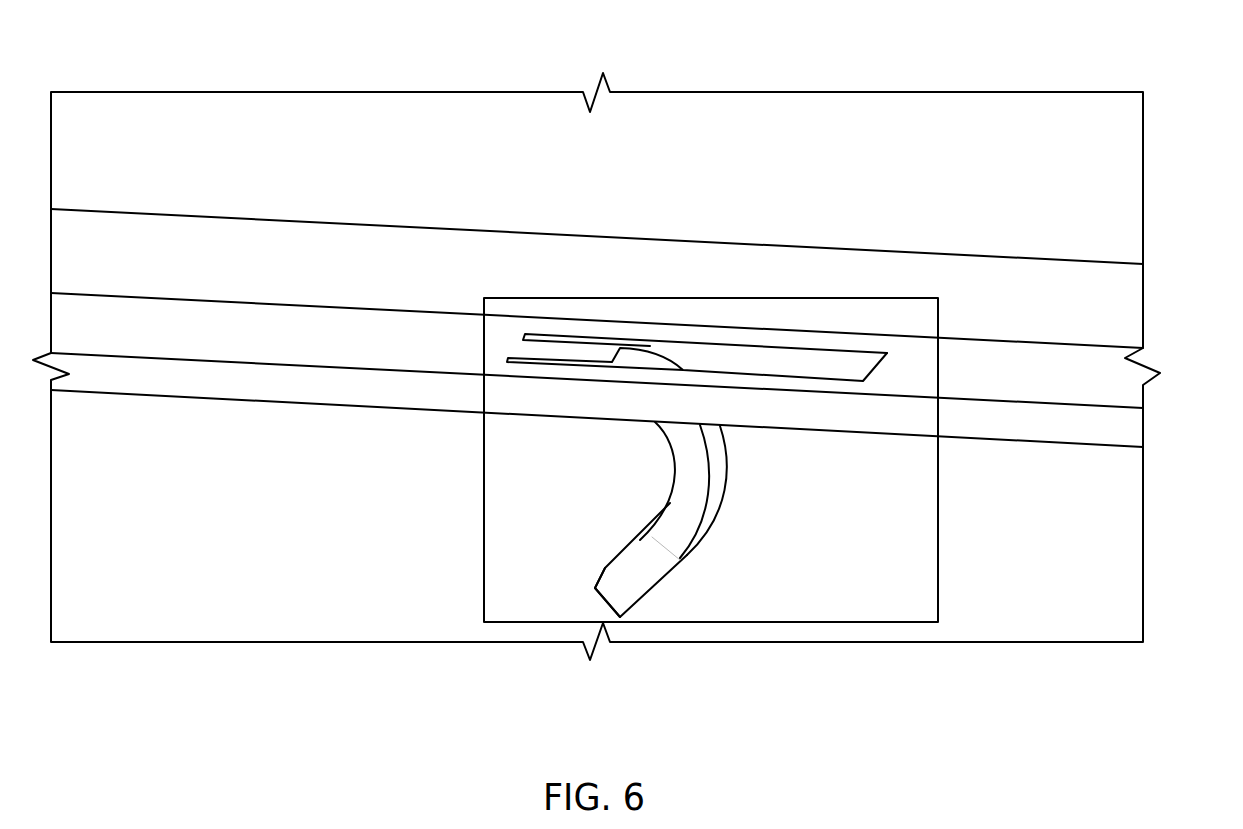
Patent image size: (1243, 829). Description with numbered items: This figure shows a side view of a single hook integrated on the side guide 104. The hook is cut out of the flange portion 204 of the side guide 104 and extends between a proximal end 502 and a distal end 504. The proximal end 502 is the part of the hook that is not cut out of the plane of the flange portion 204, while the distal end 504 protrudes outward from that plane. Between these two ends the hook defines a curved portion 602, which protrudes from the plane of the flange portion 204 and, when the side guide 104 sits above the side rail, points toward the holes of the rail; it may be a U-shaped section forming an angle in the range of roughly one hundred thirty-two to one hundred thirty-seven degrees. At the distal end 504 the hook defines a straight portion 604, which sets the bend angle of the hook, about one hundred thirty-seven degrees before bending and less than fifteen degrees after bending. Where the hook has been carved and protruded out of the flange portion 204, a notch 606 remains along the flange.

The side guide 104 is at (953, 108).
The flange portion 204 is at (1112, 390).
The proximal end 502 is at (575, 335).
The notch 606 is at (838, 368).
The curved portion 602 is at (647, 568).
The distal end 504 is at (693, 590).
The straight portion 604 is at (595, 588).